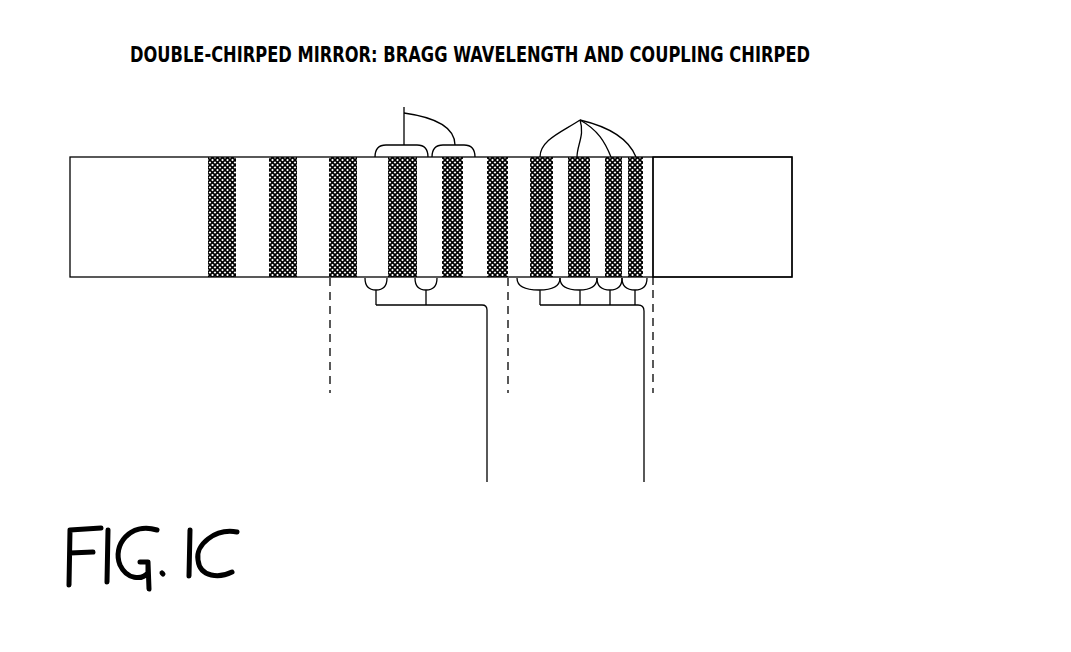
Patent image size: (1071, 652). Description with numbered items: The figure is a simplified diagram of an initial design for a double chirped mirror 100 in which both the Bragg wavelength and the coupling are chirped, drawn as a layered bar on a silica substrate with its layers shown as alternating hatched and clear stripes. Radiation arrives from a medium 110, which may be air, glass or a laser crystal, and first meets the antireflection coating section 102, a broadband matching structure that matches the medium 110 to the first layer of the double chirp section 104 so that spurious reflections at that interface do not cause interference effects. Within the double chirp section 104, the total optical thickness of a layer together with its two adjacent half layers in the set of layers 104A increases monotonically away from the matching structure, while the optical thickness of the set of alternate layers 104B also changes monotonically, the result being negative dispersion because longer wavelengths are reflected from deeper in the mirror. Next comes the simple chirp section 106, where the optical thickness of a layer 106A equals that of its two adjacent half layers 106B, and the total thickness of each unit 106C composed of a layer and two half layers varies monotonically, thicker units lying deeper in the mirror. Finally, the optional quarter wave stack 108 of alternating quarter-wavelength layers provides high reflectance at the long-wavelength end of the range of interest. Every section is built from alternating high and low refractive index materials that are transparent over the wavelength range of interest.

The double chirped mirror 100 is at (120, 140).
The antireflection coating section 102 is at (716, 384).
The double chirp section 104 is at (575, 502).
The set of layers 104A is at (595, 394).
The set of alternate layers 104B is at (588, 125).
The simple chirp section 106 is at (391, 436).
The layer 106A is at (403, 278).
The two adjacent half layers 106B is at (439, 394).
The unit 106C is at (425, 120).
The optional quarter wave stack 108 is at (276, 436).
The medium 110 is at (799, 223).